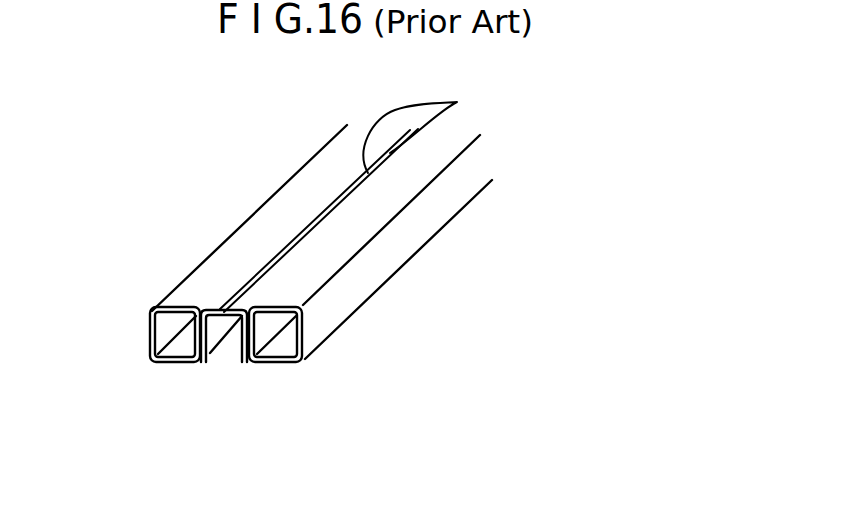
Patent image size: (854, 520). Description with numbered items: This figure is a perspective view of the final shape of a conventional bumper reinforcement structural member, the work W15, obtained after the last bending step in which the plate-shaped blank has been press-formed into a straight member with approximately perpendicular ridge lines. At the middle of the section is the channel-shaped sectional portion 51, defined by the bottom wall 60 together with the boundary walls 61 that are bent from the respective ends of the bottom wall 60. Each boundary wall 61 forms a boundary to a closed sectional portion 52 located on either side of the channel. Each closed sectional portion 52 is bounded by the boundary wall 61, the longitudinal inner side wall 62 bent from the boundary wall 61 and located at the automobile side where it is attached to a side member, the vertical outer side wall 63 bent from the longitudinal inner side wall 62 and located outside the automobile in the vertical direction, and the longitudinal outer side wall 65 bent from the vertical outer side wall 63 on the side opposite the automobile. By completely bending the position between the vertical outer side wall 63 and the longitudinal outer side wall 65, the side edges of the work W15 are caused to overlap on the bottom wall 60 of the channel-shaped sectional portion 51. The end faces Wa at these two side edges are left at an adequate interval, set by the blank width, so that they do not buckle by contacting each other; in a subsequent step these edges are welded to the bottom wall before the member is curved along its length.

The work W15 is at (276, 177).
The end face Wa is at (441, 129).
The bottom wall 60 is at (222, 309).
The longitudinal outer side wall 65 is at (183, 297).
The vertical outer side wall 63 is at (150, 322).
The boundary wall 61 is at (208, 345).
The longitudinal inner side wall 62 is at (170, 360).
The closed sectional portion 52 is at (148, 341).
The channel-shaped sectional portion 51 is at (231, 357).